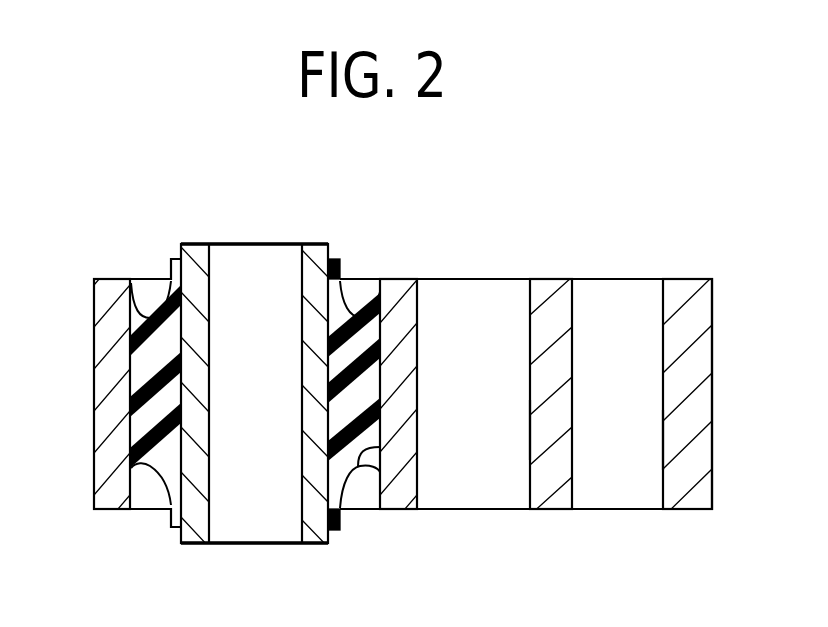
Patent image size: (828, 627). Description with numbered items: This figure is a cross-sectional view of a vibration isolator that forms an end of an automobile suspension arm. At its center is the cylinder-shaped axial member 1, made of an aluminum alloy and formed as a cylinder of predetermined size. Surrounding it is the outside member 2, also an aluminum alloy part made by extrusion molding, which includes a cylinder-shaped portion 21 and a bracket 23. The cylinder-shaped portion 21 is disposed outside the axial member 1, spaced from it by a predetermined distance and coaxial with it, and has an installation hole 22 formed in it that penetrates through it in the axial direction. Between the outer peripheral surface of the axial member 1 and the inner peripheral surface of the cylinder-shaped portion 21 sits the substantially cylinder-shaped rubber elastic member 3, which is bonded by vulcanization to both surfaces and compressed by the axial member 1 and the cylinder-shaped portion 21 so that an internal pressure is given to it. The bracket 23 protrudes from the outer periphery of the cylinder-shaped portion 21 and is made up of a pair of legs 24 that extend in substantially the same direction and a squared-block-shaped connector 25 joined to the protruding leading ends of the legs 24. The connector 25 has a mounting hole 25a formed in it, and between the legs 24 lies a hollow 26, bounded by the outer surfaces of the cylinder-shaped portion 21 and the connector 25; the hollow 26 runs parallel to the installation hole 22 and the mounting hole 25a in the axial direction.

The axial member 1 is at (196, 290).
The outside member 2 is at (415, 268).
The rubber elastic member 3 is at (160, 340).
The cylinder-shaped portion 21 is at (395, 292).
The installation hole 22 is at (358, 467).
The bracket 23 is at (552, 267).
The legs 24 is at (472, 305).
The connector 25 is at (679, 293).
The mounting hole 25a is at (663, 433).
The hollow 26 is at (530, 427).